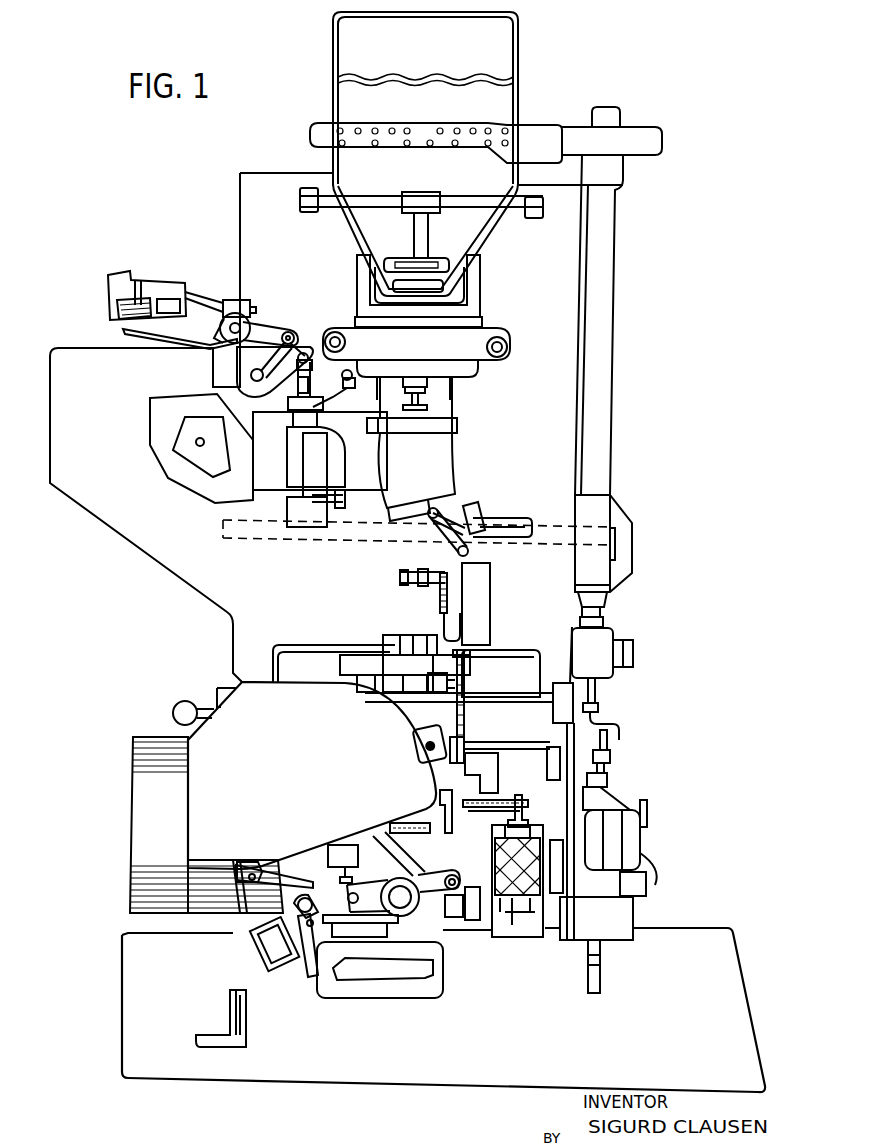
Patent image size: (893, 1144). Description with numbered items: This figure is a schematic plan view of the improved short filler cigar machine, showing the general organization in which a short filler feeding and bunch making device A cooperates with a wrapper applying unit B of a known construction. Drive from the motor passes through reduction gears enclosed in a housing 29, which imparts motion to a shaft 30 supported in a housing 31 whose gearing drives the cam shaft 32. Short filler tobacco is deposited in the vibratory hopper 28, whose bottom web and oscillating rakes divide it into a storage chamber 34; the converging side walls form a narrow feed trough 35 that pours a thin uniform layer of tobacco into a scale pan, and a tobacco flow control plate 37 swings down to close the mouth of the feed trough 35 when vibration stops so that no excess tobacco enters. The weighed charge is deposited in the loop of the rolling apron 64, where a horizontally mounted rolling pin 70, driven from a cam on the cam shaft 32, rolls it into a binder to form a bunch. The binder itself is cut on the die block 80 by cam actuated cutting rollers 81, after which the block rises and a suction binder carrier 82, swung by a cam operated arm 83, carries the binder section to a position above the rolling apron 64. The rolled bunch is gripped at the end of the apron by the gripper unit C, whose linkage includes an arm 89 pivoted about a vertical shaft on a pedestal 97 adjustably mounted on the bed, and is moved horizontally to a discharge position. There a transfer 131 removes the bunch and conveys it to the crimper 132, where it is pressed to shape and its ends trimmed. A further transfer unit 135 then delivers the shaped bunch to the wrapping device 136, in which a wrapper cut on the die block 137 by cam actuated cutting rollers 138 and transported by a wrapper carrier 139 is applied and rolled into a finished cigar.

The hopper 28 is at (355, 97).
The storage chamber 34 is at (425, 68).
The short filler feeding and bunch making device A is at (490, 121).
The housing 29 is at (620, 135).
The housing 31 is at (615, 522).
The shaft 30 is at (602, 615).
The feed trough 35 is at (372, 232).
The tobacco flow control plate 37 is at (453, 263).
The rolling pin 70 is at (437, 425).
The rolling apron 64 is at (437, 462).
The gripper unit C is at (435, 511).
The pedestal 97 is at (482, 510).
The arm 89 is at (418, 527).
The cam shaft 32 is at (335, 545).
The cutting rollers 81 is at (122, 313).
The die block 80 is at (195, 450).
The binder carrier 82 is at (335, 450).
The cam operated arm 83 is at (323, 480).
The transfer 131 is at (440, 600).
The crimper 132 is at (397, 672).
The transfer unit 135 is at (468, 718).
The wrapping device 136 is at (412, 826).
The wrapper carrier 139 is at (416, 893).
The wrapper applying unit B is at (390, 1047).
The cutting rollers 138 is at (292, 968).
The die block 137 is at (362, 970).